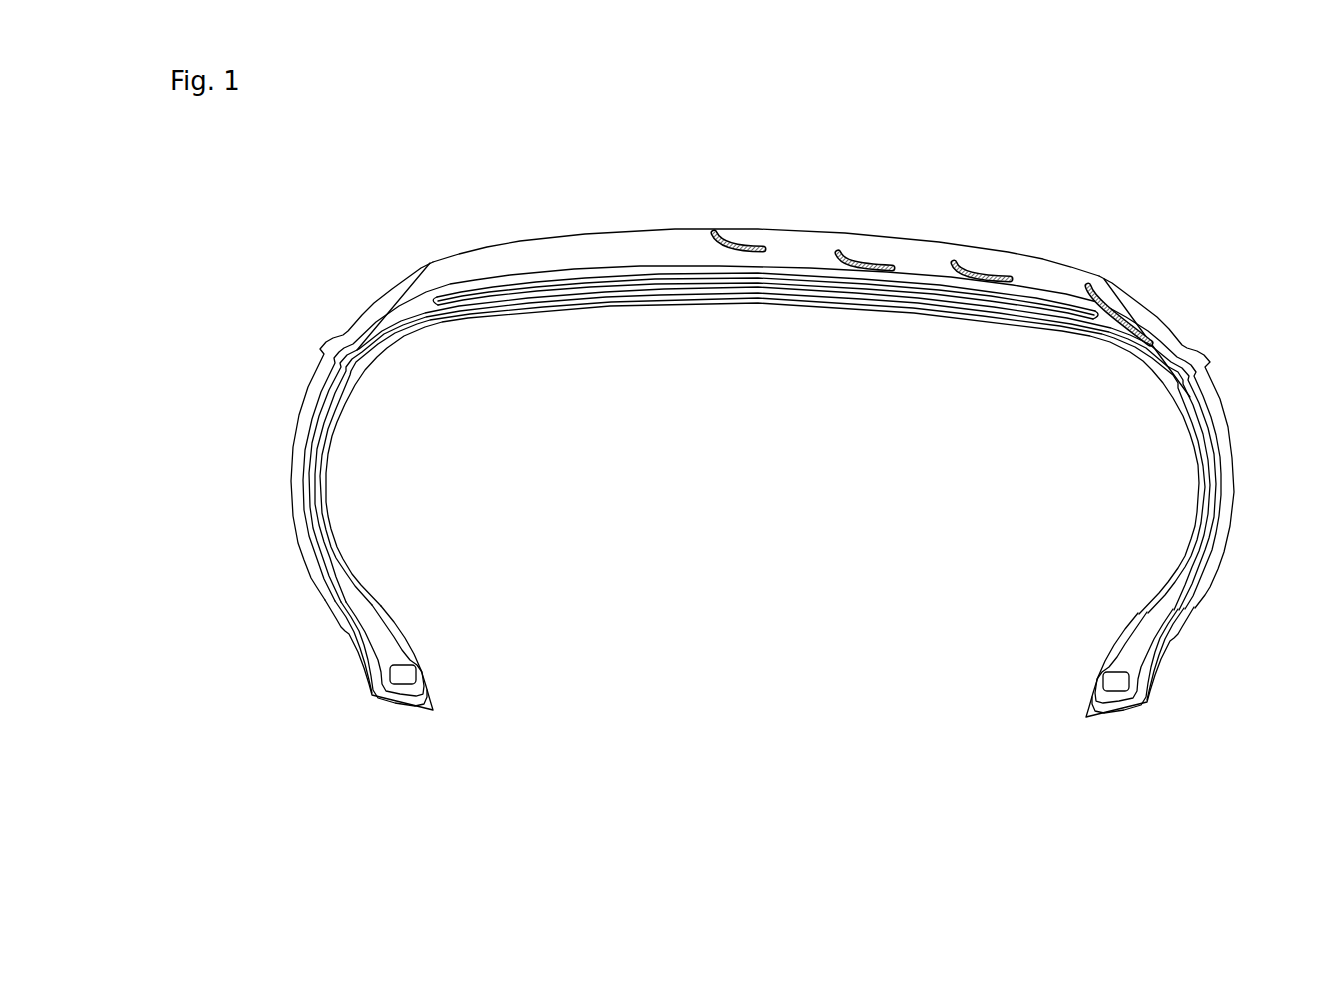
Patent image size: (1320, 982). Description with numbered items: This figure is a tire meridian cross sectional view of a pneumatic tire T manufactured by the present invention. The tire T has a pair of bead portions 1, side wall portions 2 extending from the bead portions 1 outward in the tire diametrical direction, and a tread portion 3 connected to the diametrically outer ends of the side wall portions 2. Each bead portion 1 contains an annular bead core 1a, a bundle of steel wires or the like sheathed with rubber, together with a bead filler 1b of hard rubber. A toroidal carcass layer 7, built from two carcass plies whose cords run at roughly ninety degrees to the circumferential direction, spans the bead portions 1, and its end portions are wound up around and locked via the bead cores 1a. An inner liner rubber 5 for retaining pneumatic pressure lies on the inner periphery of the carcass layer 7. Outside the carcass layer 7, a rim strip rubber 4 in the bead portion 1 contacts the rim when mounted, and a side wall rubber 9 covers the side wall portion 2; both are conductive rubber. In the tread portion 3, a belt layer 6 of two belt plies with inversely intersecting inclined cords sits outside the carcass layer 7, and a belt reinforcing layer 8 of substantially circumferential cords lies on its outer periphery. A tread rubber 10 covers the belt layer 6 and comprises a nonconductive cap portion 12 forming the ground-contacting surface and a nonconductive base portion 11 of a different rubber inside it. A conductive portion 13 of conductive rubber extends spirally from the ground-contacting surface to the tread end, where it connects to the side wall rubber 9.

The pneumatic tire T is at (350, 207).
The bead portion 1 is at (368, 692).
The bead core 1a is at (410, 680).
The bead filler 1b is at (393, 648).
The side wall portion 2 is at (283, 418).
The tread portion 3 is at (583, 222).
The rim strip rubber 4 is at (357, 637).
The inner liner rubber 5 is at (453, 320).
The belt layer 6 is at (707, 290).
The carcass layer 7 is at (1193, 398).
The belt reinforcing layer 8 is at (521, 279).
The side wall rubber 9 is at (293, 497).
The tread rubber 10 is at (921, 243).
The base portion 11 is at (671, 270).
The cap portion 12 is at (797, 240).
The conductive portion 13 is at (875, 250).